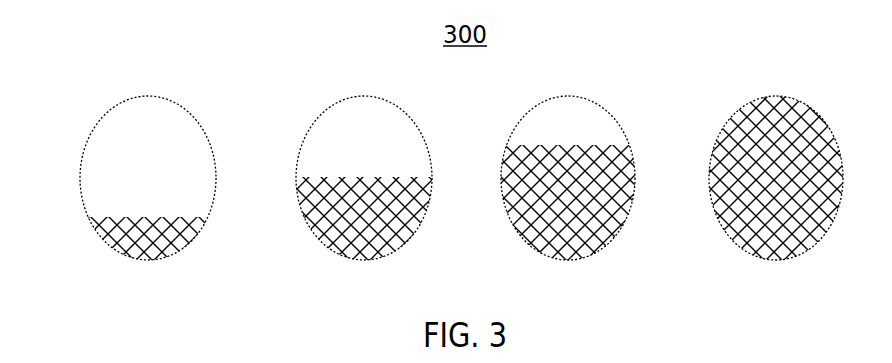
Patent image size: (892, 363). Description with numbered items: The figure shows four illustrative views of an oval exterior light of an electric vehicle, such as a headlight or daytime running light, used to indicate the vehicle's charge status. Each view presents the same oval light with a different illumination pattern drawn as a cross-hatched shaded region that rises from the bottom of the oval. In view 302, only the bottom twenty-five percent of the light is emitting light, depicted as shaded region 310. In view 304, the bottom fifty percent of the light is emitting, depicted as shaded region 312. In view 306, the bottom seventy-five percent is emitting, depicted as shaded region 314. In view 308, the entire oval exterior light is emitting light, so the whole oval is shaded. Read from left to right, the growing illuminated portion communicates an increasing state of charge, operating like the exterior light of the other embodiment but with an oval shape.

The view 302 is at (150, 96).
The view 304 is at (364, 96).
The view 306 is at (568, 96).
The view 308 is at (776, 96).
The shaded region 310 is at (130, 233).
The shaded region 312 is at (337, 207).
The shaded region 314 is at (745, 130).